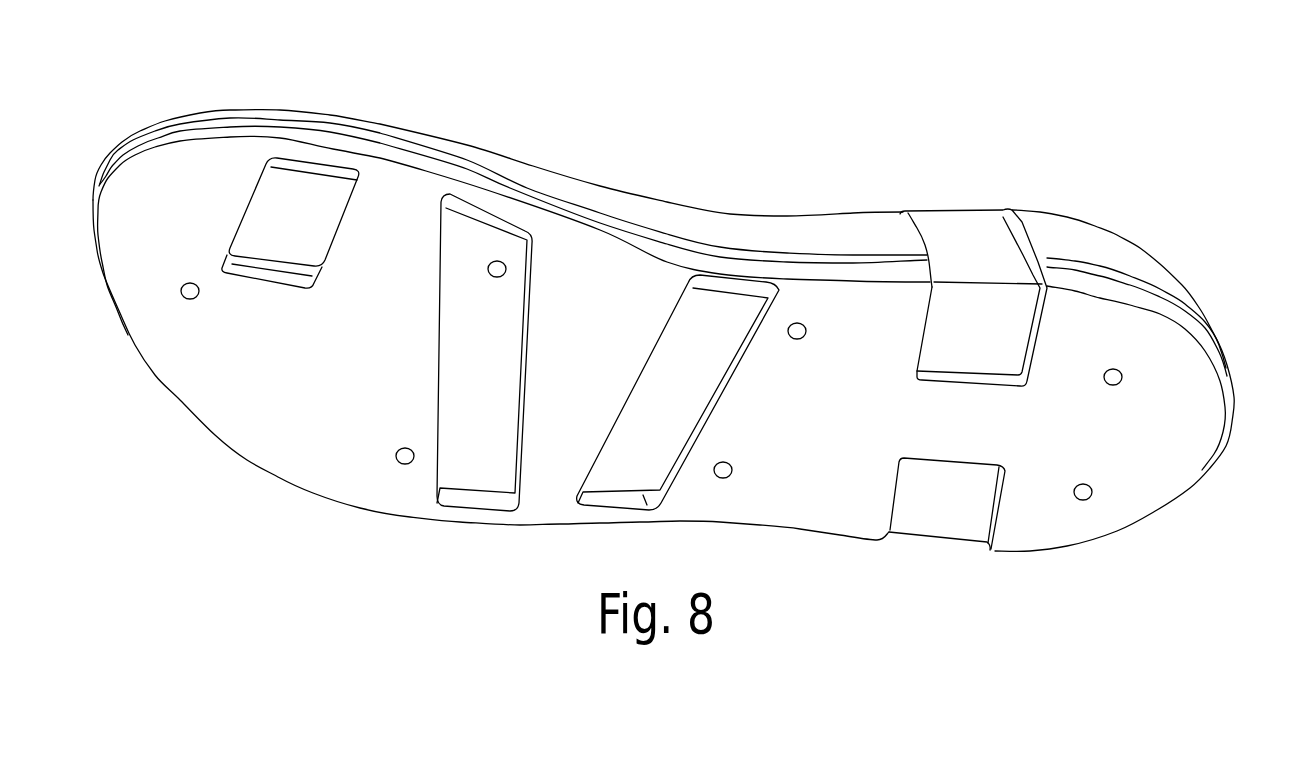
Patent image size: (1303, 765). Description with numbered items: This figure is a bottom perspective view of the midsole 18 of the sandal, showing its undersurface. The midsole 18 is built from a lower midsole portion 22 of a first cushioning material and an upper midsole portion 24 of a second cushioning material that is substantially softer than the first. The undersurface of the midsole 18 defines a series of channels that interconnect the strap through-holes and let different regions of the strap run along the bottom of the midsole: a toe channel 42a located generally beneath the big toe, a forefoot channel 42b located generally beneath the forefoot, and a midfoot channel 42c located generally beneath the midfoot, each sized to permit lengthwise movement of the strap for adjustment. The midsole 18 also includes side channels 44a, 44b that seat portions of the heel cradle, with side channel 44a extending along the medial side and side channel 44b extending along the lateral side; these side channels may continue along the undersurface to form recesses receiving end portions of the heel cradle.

The midsole 18 is at (705, 138).
The lower midsole portion 22 is at (1153, 497).
The upper midsole portion 24 is at (1128, 250).
The toe channel 42a is at (307, 223).
The forefoot channel 42b is at (503, 383).
The midfoot channel 42c is at (693, 395).
The side channel 44a is at (968, 232).
The side channel 44b is at (922, 523).